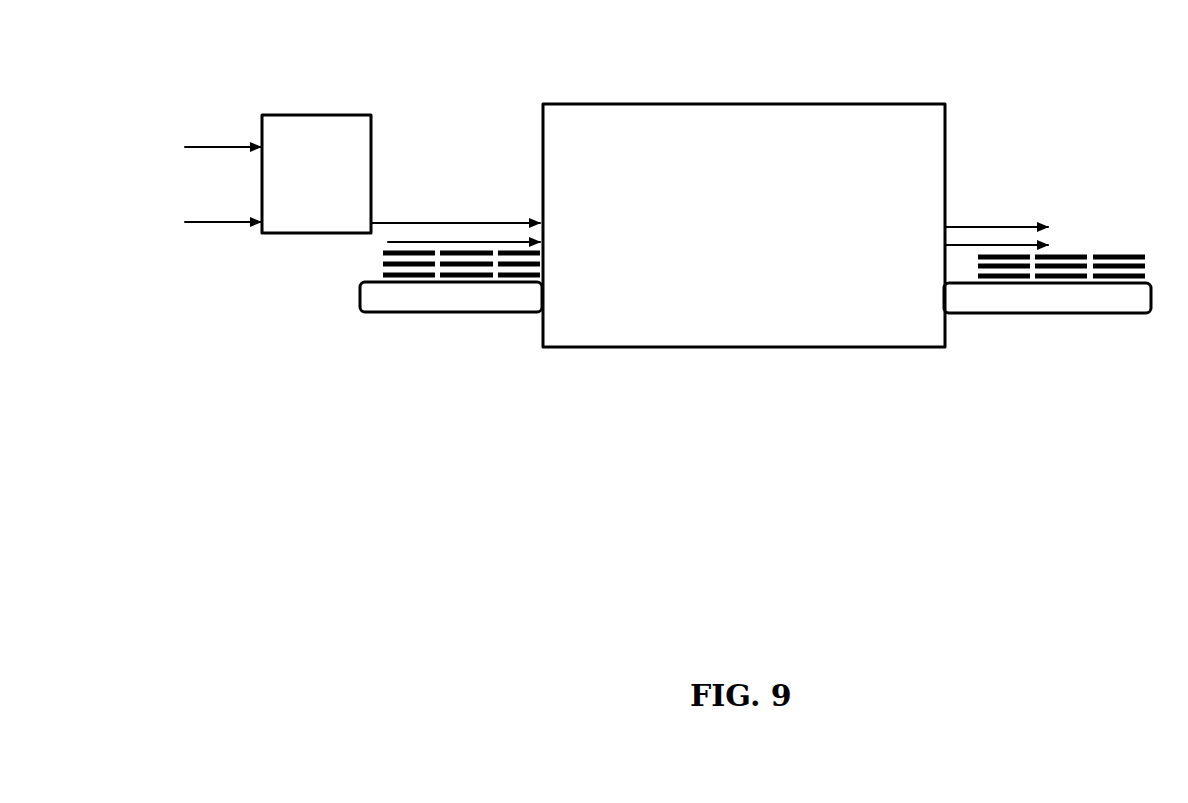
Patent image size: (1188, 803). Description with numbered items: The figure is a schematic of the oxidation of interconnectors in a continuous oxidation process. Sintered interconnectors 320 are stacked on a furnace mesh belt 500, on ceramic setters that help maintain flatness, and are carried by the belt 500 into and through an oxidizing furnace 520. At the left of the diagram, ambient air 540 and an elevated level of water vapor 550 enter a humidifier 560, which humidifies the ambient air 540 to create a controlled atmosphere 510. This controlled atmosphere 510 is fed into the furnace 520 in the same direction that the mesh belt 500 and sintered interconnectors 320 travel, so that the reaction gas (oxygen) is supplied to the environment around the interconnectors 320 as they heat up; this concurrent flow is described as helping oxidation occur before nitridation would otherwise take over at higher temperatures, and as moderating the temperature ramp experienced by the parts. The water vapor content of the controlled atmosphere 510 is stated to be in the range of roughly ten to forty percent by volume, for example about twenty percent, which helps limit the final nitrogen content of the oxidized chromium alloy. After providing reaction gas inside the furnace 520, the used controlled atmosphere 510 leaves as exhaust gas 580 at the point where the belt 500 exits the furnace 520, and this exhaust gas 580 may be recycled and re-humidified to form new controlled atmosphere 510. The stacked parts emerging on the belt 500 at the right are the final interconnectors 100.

The final interconnectors 100 is at (1107, 277).
The sintered interconnectors 320 is at (510, 275).
The furnace mesh belt 500 is at (360, 292).
The controlled atmosphere 510 is at (445, 222).
The oxidizing furnace 520 is at (715, 102).
The ambient air 540 is at (213, 142).
The water vapor 550 is at (208, 225).
The humidifier 560 is at (310, 113).
The exhaust gas 580 is at (1000, 223).